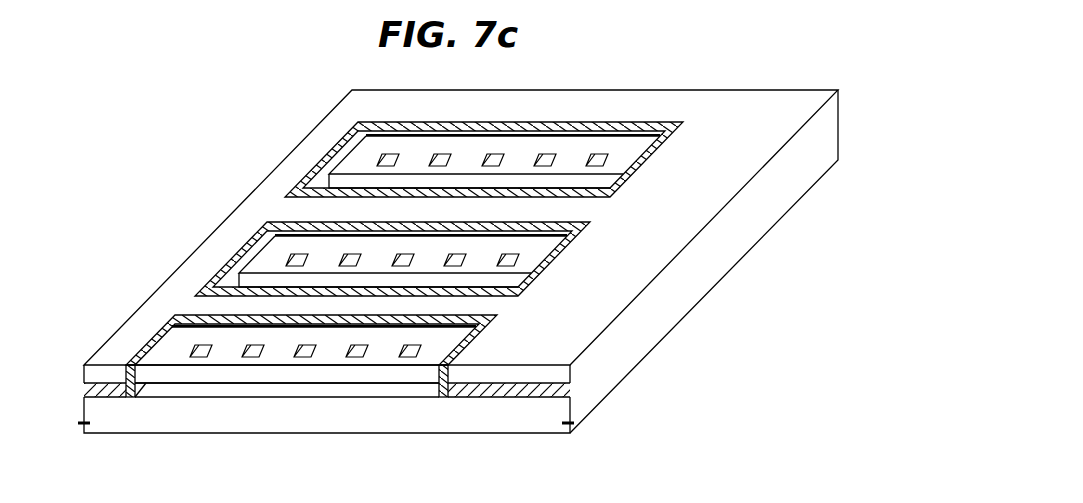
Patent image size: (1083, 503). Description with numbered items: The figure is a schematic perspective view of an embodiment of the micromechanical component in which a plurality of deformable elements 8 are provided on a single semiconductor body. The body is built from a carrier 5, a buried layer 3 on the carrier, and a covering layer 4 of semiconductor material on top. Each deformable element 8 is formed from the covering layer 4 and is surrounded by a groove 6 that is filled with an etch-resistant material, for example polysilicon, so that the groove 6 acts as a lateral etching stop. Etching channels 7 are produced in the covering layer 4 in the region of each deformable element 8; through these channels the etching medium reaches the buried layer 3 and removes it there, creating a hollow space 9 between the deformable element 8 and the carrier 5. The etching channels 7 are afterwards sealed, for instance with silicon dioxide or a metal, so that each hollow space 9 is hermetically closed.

The buried layer 3 is at (570, 386).
The covering layer 4 is at (570, 367).
The carrier 5 is at (563, 406).
The groove 6 is at (132, 398).
The etching channels 7 is at (190, 347).
The deformable element 8 is at (235, 338).
The hollow space 9 is at (308, 393).